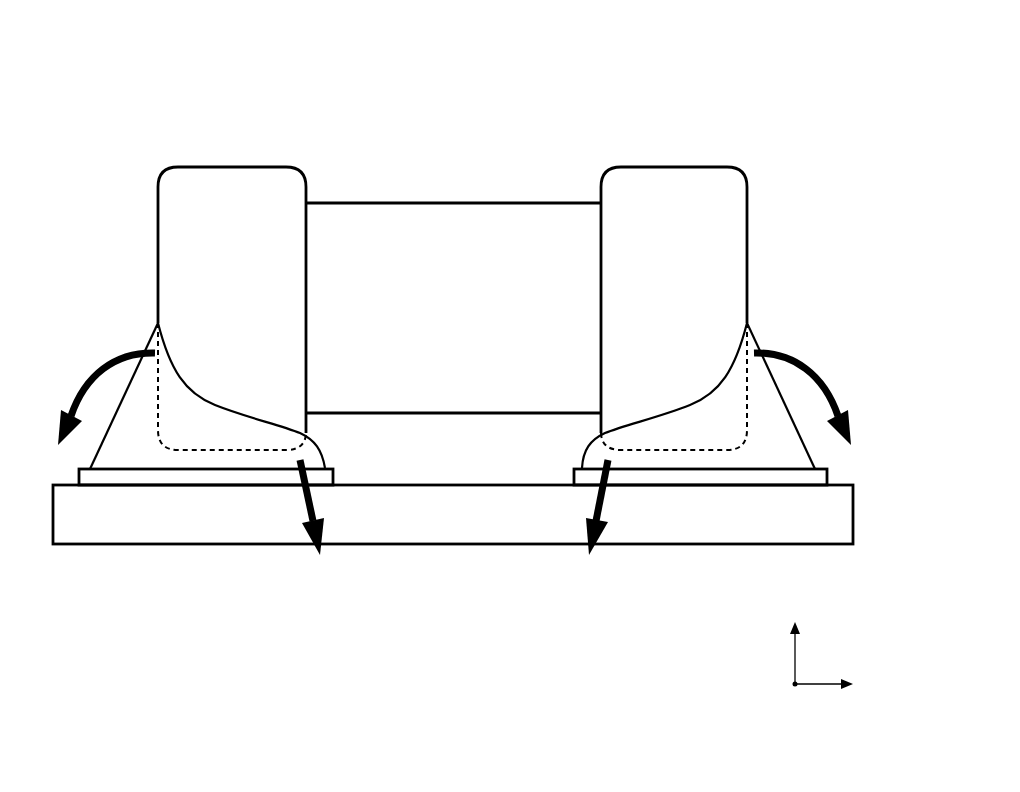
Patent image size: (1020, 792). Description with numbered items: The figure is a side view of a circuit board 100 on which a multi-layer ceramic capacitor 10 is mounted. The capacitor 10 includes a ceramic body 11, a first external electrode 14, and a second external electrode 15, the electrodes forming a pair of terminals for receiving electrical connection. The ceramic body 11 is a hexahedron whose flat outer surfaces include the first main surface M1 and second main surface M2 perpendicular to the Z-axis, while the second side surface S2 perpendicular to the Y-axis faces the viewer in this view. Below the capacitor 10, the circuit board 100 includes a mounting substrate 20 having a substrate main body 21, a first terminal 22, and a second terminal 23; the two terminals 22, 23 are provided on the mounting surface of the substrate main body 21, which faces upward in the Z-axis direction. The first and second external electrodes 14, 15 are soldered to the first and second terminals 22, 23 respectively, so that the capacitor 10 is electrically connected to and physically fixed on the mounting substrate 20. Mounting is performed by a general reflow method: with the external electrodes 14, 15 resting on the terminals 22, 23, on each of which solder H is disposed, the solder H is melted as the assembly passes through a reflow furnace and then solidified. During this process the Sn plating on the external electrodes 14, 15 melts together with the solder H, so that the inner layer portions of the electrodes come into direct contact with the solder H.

The circuit board 100 is at (696, 64).
The multi-layer ceramic capacitor 10 is at (266, 102).
The ceramic body 11 is at (395, 165).
The first external electrode 14 is at (177, 267).
The second external electrode 15 is at (728, 267).
The mounting substrate 20 is at (128, 603).
The substrate main body 21 is at (448, 527).
The first terminal 22 is at (248, 480).
The second terminal 23 is at (646, 478).
The first main surface M1 is at (452, 203).
The second main surface M2 is at (447, 413).
The second side surface S2 is at (466, 322).
The solder H is at (313, 448).